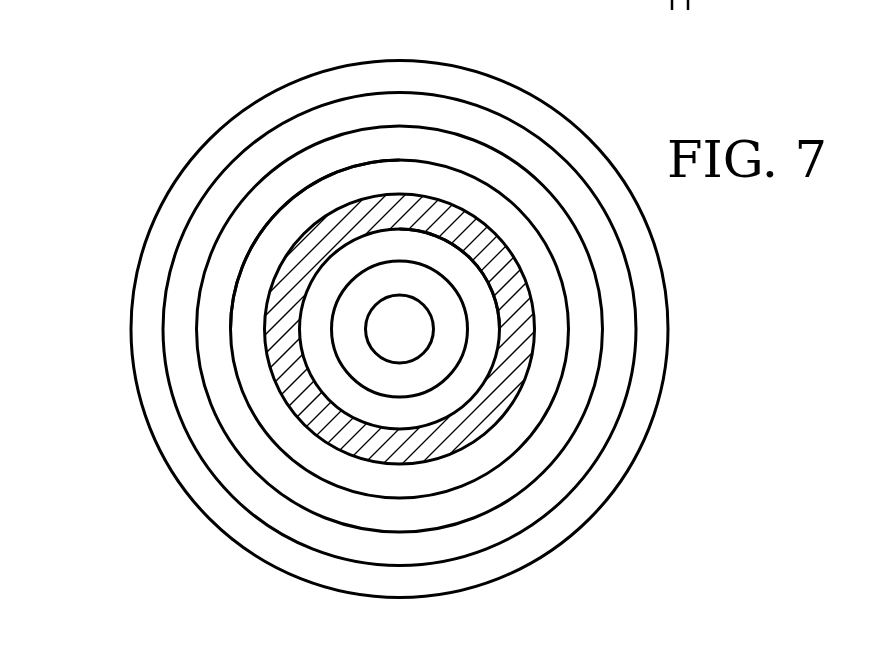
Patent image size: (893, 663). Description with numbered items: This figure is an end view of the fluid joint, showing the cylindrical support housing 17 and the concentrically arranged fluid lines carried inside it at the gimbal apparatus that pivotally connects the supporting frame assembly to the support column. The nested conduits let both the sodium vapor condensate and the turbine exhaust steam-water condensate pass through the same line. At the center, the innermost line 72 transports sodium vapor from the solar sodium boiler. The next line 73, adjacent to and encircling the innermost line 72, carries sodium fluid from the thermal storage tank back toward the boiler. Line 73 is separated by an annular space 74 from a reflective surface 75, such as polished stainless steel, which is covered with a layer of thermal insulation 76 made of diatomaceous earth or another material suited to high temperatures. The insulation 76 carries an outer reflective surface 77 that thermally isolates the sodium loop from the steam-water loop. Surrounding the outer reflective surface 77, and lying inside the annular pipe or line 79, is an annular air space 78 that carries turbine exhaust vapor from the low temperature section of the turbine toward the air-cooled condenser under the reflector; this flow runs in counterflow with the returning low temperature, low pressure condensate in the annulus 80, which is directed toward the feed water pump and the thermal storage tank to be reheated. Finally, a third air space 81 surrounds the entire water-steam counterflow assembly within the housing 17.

The cylindrical support housing 17 is at (121, 385).
The innermost line 72 is at (398, 296).
The next line 73 is at (460, 281).
The annular space 74 is at (499, 330).
The reflective surface 75 is at (500, 389).
The layer of thermal insulation 76 is at (458, 439).
The outer reflective surface 77 is at (350, 466).
The annular air space 78 is at (250, 267).
The annular pipe or line 79 is at (286, 473).
The annulus 80 is at (242, 162).
The third air space 81 is at (188, 486).